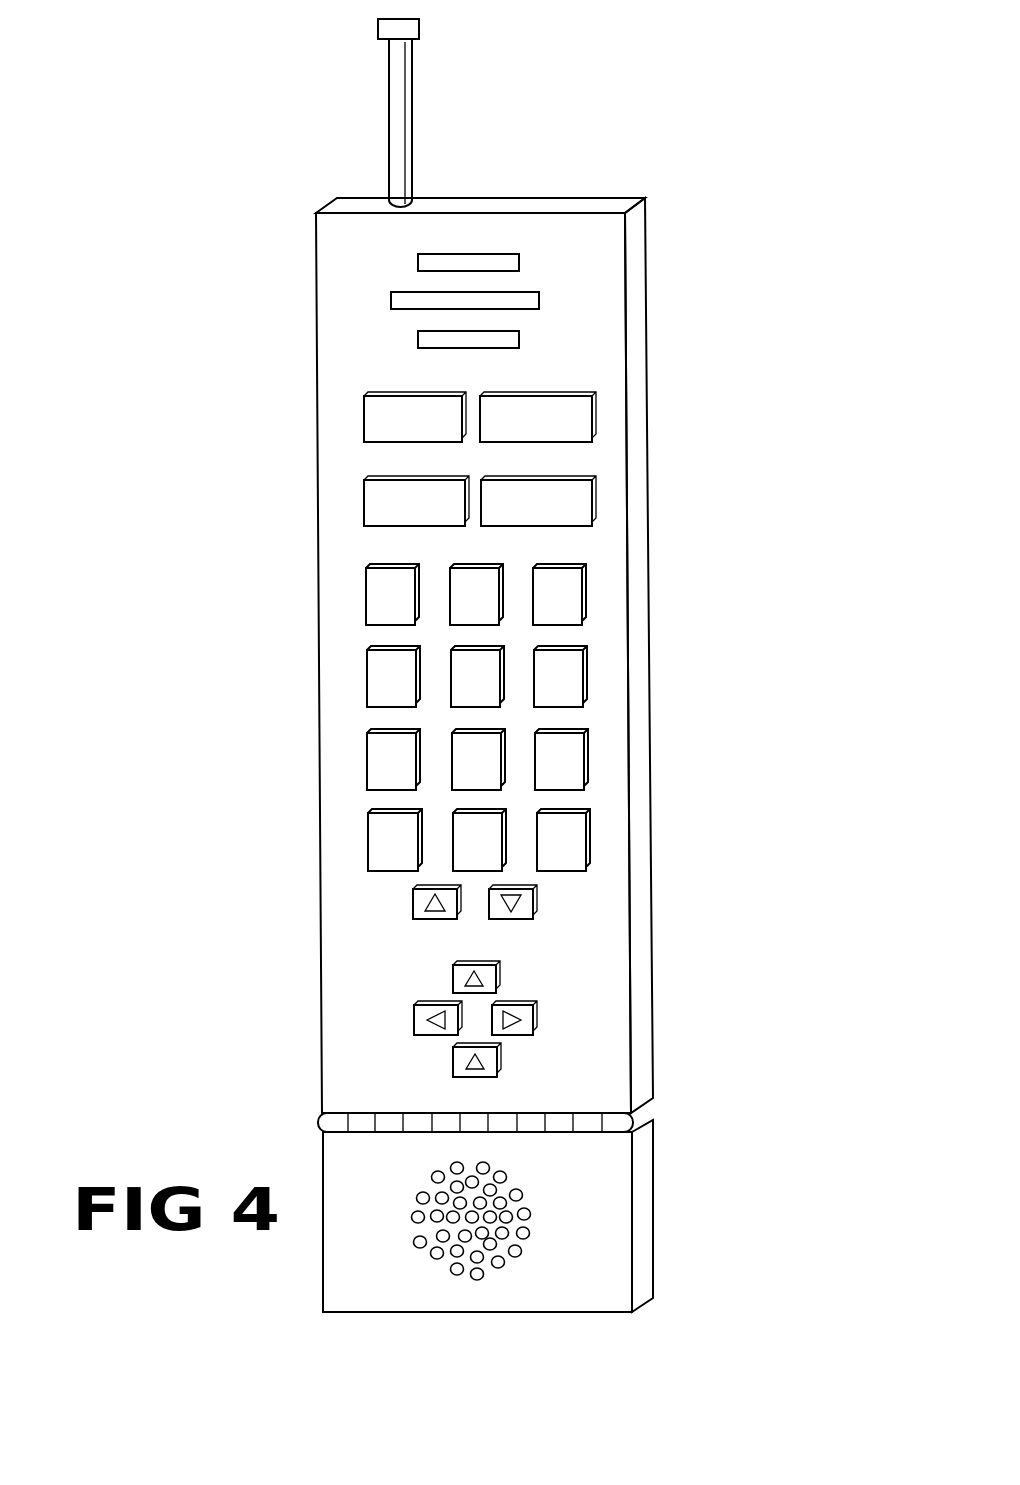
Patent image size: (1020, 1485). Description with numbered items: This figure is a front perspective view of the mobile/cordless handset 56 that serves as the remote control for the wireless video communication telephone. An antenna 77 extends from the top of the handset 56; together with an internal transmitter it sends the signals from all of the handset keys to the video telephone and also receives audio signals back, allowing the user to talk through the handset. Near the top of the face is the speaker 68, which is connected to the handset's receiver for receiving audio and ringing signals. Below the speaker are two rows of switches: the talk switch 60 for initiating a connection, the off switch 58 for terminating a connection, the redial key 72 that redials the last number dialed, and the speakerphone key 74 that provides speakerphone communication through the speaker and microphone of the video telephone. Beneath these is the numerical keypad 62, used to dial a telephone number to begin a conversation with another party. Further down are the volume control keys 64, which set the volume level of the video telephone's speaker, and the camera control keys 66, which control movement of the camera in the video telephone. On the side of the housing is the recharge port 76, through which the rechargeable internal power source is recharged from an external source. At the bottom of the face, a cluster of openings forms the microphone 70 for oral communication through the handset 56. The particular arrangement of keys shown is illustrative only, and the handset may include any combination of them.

The mobile/cordless handset 56 is at (511, 192).
The antenna 77 is at (395, 100).
The speaker 68 is at (532, 302).
The talk switch 60 is at (364, 401).
The off switch 58 is at (590, 402).
The redial key 72 is at (368, 484).
The speakerphone key 74 is at (590, 490).
The numerical keypad 62 is at (354, 677).
The volume control keys 64 is at (415, 897).
The camera control keys 66 is at (458, 972).
The recharge port 76 is at (641, 854).
The microphone 70 is at (414, 1248).